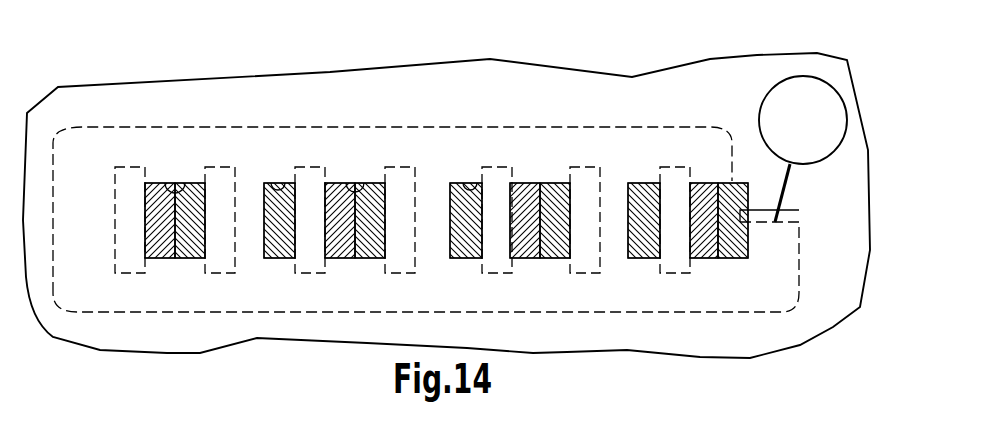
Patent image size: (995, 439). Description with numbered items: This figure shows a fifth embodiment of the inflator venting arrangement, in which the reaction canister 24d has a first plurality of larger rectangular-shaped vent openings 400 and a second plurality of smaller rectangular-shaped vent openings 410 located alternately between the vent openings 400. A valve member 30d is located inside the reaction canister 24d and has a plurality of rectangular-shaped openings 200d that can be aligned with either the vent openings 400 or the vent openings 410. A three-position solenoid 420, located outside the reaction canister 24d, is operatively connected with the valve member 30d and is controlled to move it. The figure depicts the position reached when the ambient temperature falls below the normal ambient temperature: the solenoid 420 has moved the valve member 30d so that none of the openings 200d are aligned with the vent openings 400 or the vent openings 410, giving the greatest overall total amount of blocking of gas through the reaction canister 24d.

The first plurality of rectangular-shaped vent openings 400 is at (176, 183).
The second plurality of rectangular-shaped vent openings 410 is at (280, 183).
The three-position solenoid 420 is at (803, 98).
The rectangular-shaped openings 200d is at (222, 273).
The valve member 30d is at (625, 302).
The reaction canister 24d is at (833, 273).